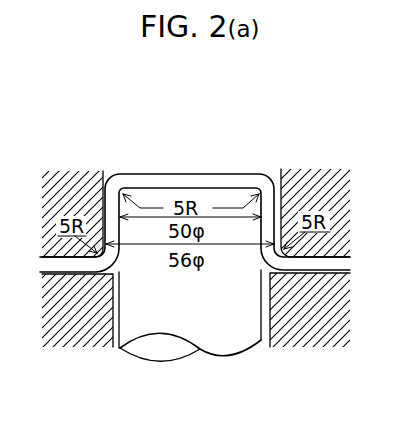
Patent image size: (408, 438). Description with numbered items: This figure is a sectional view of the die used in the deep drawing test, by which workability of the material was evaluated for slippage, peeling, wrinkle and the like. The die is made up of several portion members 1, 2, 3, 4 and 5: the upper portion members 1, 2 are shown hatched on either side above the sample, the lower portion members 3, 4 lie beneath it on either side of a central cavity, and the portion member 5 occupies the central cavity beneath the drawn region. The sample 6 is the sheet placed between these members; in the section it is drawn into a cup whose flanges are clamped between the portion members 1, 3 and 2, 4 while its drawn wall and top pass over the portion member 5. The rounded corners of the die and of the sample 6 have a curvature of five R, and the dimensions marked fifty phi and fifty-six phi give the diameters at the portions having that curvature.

The portion member of the die 1 is at (77, 171).
The portion member of the die 2 is at (311, 168).
The portion member of the die 3 is at (74, 342).
The portion member of the die 4 is at (316, 343).
The portion member of the die 5 is at (160, 347).
The sample 6 is at (166, 175).